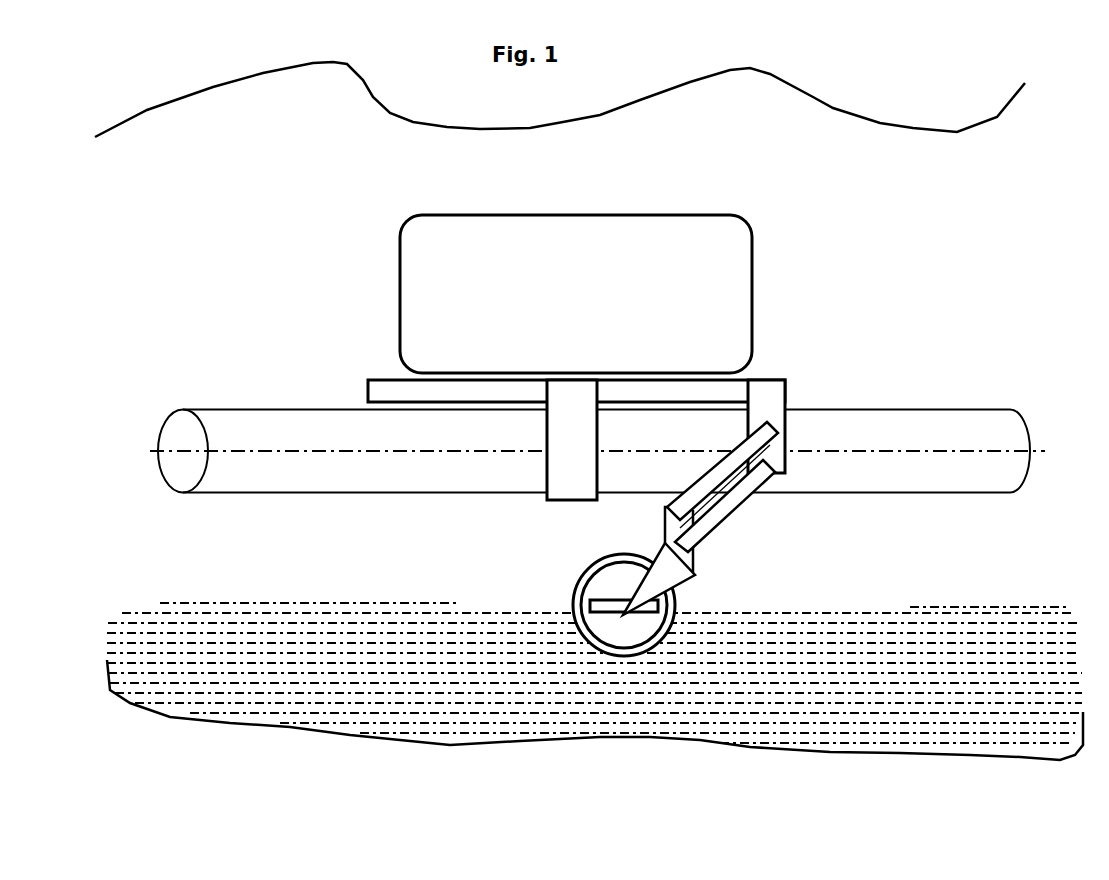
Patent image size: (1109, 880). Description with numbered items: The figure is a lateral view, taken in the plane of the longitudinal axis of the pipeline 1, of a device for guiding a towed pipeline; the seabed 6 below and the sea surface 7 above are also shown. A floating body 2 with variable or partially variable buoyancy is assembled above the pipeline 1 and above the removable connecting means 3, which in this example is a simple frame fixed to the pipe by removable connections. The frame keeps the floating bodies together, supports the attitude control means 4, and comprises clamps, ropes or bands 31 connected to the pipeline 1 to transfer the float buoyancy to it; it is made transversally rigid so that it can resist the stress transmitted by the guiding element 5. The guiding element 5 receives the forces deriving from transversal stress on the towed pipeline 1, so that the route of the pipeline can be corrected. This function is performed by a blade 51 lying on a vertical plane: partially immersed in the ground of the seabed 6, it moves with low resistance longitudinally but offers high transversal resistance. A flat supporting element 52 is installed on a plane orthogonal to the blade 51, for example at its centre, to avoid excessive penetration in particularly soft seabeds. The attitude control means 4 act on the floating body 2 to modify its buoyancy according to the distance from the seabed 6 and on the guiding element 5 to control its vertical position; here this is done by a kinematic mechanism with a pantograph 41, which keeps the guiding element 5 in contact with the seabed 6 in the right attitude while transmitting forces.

The pipeline 1 is at (283, 425).
The floating body 2 is at (700, 258).
The removable connecting means 3 is at (390, 388).
The clamps, ropes or bands 31 is at (555, 460).
The attitude control means 4 is at (743, 528).
The pantograph 41 is at (738, 462).
The guiding element 5 is at (697, 597).
The blade 51 is at (587, 568).
The flat supporting element 52 is at (590, 606).
The seabed 6 is at (192, 590).
The sea surface 7 is at (373, 97).